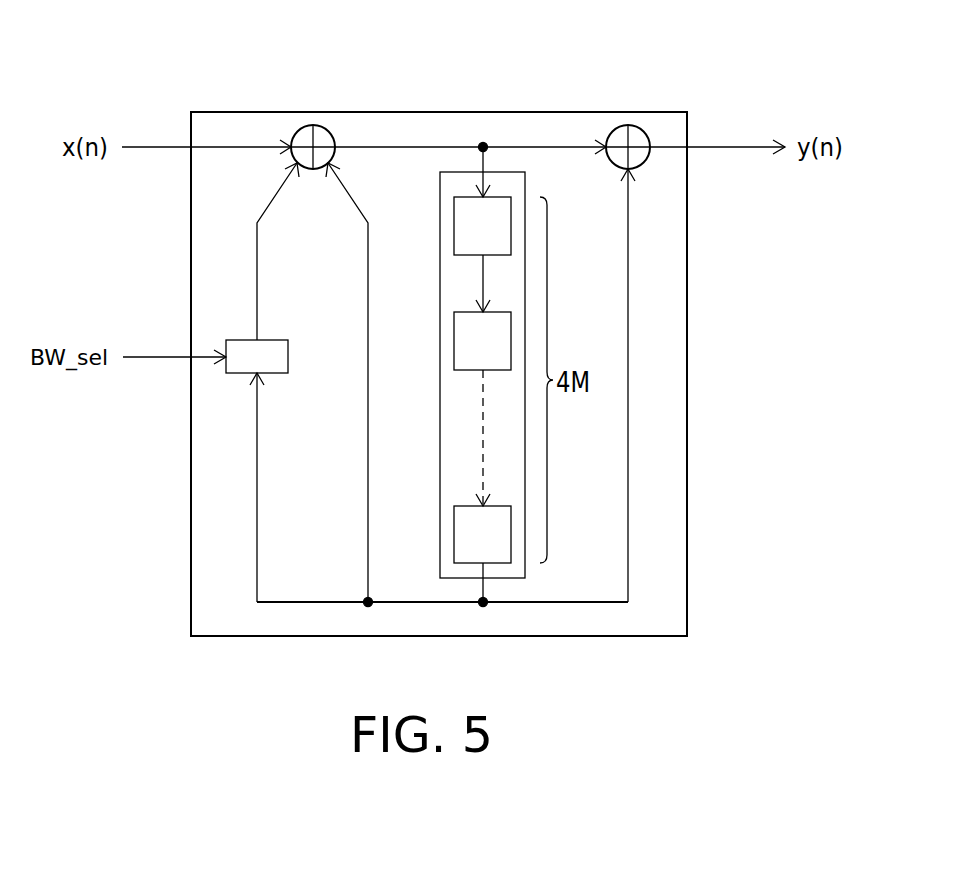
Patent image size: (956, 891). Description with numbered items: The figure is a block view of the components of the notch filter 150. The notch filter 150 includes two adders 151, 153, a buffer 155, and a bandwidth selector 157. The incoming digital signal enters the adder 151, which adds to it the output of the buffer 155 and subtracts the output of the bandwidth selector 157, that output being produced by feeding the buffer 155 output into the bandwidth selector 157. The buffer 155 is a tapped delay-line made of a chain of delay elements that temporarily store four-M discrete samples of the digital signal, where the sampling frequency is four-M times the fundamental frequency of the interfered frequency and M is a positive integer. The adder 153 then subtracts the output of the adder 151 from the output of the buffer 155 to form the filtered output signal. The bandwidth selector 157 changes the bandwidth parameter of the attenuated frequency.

The notch filter 150 is at (687, 357).
The adder 151 is at (312, 126).
The adder 153 is at (624, 126).
The buffer 155 is at (440, 405).
The bandwidth selector 157 is at (272, 375).